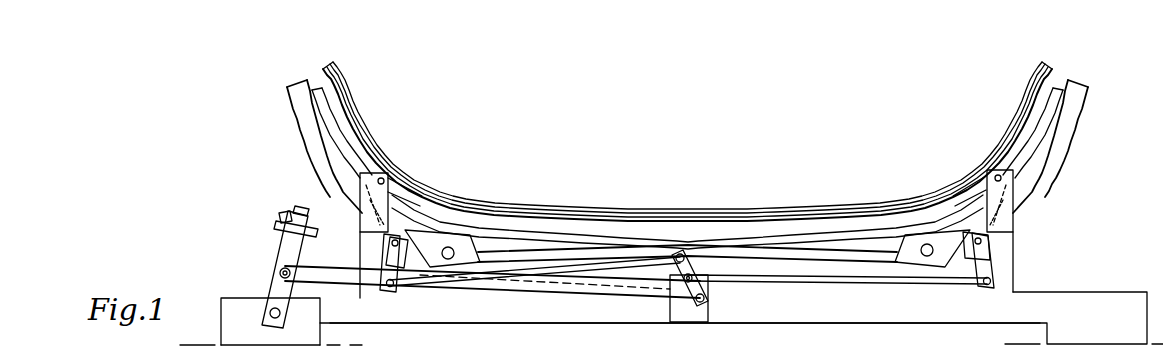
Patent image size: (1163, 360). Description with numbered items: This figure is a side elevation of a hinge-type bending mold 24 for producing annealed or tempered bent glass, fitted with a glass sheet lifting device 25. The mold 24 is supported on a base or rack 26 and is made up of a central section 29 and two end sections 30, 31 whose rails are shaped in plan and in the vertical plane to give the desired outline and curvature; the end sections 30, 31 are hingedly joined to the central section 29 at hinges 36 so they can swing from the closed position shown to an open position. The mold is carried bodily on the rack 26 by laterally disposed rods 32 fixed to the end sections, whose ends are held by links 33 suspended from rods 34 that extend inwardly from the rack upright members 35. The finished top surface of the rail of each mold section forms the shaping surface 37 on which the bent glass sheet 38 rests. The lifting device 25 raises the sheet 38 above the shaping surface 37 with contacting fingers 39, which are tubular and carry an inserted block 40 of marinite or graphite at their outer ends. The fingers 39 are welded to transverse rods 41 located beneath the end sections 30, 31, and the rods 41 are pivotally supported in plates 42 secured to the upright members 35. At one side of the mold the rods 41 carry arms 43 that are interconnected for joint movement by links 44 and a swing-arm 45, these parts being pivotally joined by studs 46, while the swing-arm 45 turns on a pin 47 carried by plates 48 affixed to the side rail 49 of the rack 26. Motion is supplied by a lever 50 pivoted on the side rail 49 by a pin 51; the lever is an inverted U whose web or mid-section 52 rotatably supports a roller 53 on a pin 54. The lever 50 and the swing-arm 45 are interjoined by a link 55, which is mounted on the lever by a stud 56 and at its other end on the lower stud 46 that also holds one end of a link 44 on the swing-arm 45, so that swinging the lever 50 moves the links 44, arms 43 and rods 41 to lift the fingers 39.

The bending mold 24 is at (315, 146).
The lifting device 25 is at (269, 263).
The base or rack 26 is at (1068, 317).
The central section 29 is at (750, 250).
The end section 30 is at (334, 158).
The end section 31 is at (1044, 145).
The rod 32 is at (362, 222).
The link 33 is at (333, 197).
The rod 34 is at (386, 178).
The rack upright member 35 is at (408, 200).
The hinge 36 is at (453, 250).
The shaping surface 37 is at (583, 233).
The bent glass sheet 38 is at (645, 212).
The contacting finger 39 is at (432, 205).
The block 40 is at (410, 187).
The rod 41 is at (388, 242).
The plate 42 is at (385, 252).
The arm 43 is at (381, 285).
The link 44 is at (503, 275).
The swing-arm 45 is at (694, 292).
The stud 46 is at (683, 256).
The pin 47 is at (703, 280).
The plate 48 is at (697, 312).
The side rail 49 is at (545, 310).
The lever 50 is at (282, 290).
The pin 51 is at (277, 318).
The web or mid-section 52 is at (280, 225).
The roller 53 is at (282, 214).
The pin 54 is at (302, 208).
The link 55 is at (447, 282).
The stud 56 is at (280, 271).